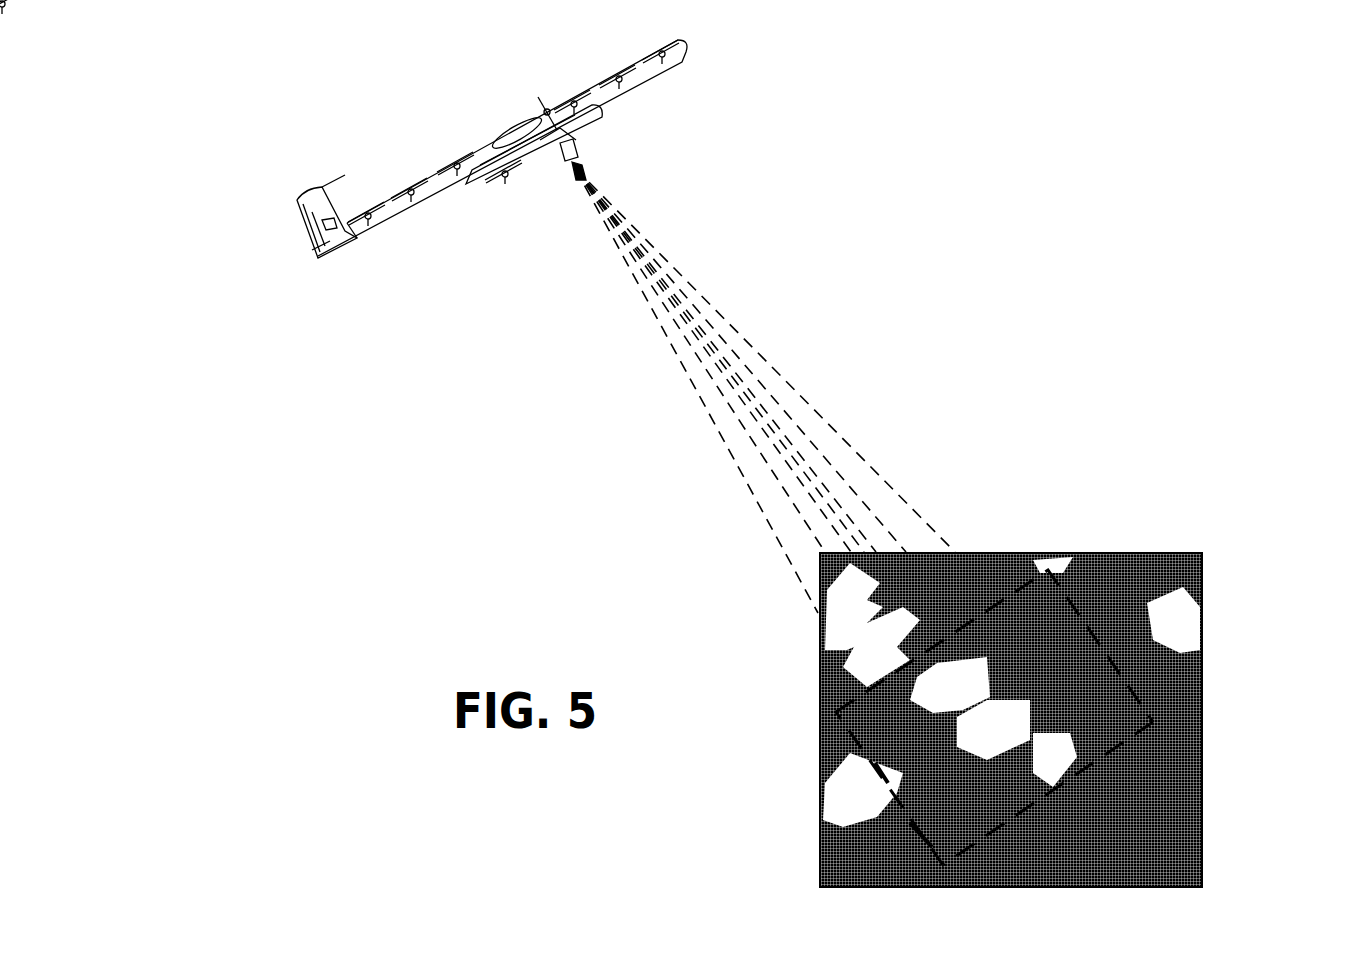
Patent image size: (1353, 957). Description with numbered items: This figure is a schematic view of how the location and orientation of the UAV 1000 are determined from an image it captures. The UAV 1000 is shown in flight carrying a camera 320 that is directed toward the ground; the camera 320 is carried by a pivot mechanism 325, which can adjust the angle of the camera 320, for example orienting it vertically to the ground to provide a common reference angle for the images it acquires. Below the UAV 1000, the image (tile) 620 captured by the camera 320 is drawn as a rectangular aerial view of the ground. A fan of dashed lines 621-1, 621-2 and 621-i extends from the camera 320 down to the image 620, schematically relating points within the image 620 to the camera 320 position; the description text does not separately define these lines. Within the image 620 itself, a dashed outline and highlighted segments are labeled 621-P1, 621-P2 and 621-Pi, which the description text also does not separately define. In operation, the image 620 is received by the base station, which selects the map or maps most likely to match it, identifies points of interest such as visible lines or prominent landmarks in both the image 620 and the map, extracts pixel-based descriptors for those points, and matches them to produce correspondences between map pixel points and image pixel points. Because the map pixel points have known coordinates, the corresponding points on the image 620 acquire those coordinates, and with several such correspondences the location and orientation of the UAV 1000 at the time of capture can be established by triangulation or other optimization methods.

The UAV 1000 is at (337, 268).
The camera 320 is at (569, 161).
The pivot mechanism 325 is at (578, 143).
The image (tile) 620 is at (1029, 553).
The first line of sight 621-1 is at (758, 349).
The second line of sight 621-2 is at (788, 411).
The i-th line of sight 621-i is at (711, 417).
The first image point 621-P1 is at (1158, 718).
The second image point 621-P2 is at (1105, 748).
The i-th image point 621-Pi is at (910, 778).